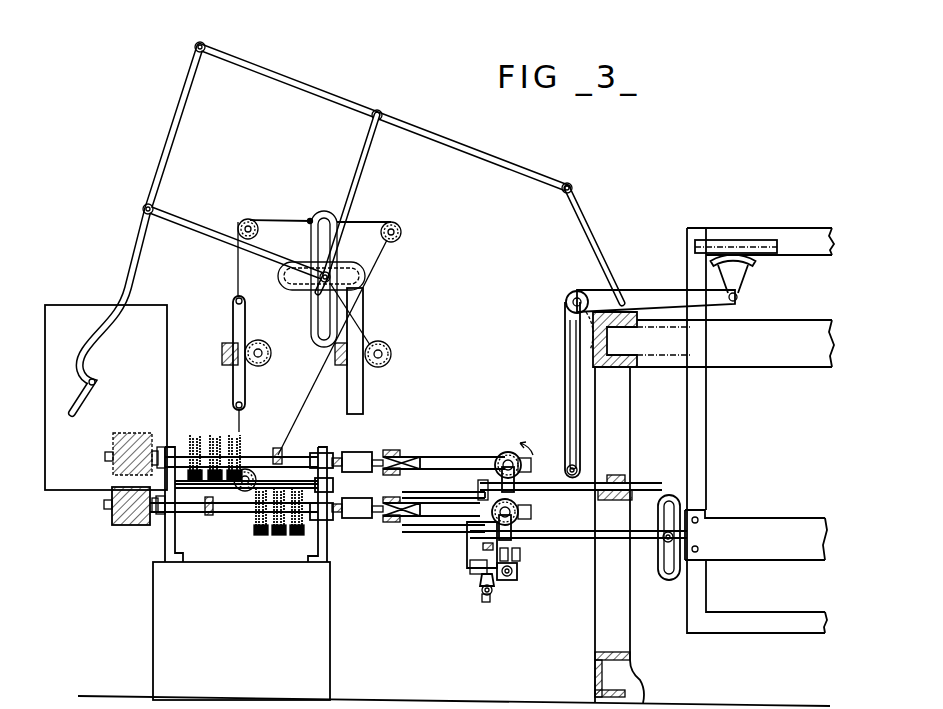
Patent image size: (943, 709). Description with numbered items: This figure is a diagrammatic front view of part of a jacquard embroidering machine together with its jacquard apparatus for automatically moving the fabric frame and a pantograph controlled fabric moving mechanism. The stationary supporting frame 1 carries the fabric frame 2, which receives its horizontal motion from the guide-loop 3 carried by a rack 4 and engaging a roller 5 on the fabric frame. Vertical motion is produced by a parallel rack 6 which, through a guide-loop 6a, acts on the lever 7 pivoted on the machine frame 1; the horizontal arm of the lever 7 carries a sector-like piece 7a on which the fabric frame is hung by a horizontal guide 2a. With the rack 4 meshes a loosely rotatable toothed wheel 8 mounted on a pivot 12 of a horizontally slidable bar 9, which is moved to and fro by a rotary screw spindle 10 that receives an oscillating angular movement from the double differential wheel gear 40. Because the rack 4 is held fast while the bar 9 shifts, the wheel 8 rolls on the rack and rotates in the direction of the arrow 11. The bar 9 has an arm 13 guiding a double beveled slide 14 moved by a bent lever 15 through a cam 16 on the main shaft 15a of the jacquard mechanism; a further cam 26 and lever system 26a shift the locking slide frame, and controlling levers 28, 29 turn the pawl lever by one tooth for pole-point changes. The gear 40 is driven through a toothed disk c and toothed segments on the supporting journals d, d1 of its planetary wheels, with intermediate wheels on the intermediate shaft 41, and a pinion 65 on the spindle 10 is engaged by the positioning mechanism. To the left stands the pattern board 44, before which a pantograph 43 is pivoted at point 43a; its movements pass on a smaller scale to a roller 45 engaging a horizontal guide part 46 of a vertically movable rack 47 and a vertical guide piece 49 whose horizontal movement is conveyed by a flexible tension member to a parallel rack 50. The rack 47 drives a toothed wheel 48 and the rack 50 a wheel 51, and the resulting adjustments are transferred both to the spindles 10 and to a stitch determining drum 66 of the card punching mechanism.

The stationary supporting frame 1 is at (768, 367).
The fabric frame 2 is at (733, 645).
The horizontal guide 2a is at (735, 240).
The guide-loop 3 is at (666, 580).
The rack 4 is at (553, 540).
The roller 5 is at (662, 546).
The rack 6 is at (567, 490).
The guide-loop 6a is at (565, 450).
The lever 7 is at (563, 353).
The sector-like piece 7a is at (752, 280).
The toothed wheel 8 is at (507, 452).
The horizontally slidable bar 9 is at (432, 470).
The screw spindle 10 is at (343, 453).
The arrow 11 is at (534, 443).
The pivot 12 is at (510, 505).
The arm 13 is at (512, 488).
The double beveled slide 14 is at (518, 572).
The bent lever 15 is at (497, 590).
The main shaft 15a is at (487, 597).
The cam 16 is at (492, 594).
The cam 26 is at (478, 592).
The lever system 26a is at (470, 568).
The controlling lever 28 is at (480, 490).
The controlling lever 29 is at (468, 540).
The double differential wheel gear 40 is at (342, 289).
The intermediate shaft 41 is at (248, 500).
The pantograph 43 is at (178, 118).
The pivot point 43a is at (575, 192).
The pattern board 44 is at (70, 490).
The roller 45 is at (350, 228).
The horizontal guide part 46 is at (285, 290).
The rack 47 is at (365, 398).
The toothed wheel 48 is at (392, 365).
The guide piece 49 is at (323, 211).
The rack 50 is at (241, 400).
The wheel 51 is at (262, 366).
The pinion 65 is at (274, 452).
The stitch determining drum 66 is at (128, 433).
The toothed disk c is at (240, 450).
The supporting journal d is at (195, 445).
The supporting journal d1 is at (219, 445).